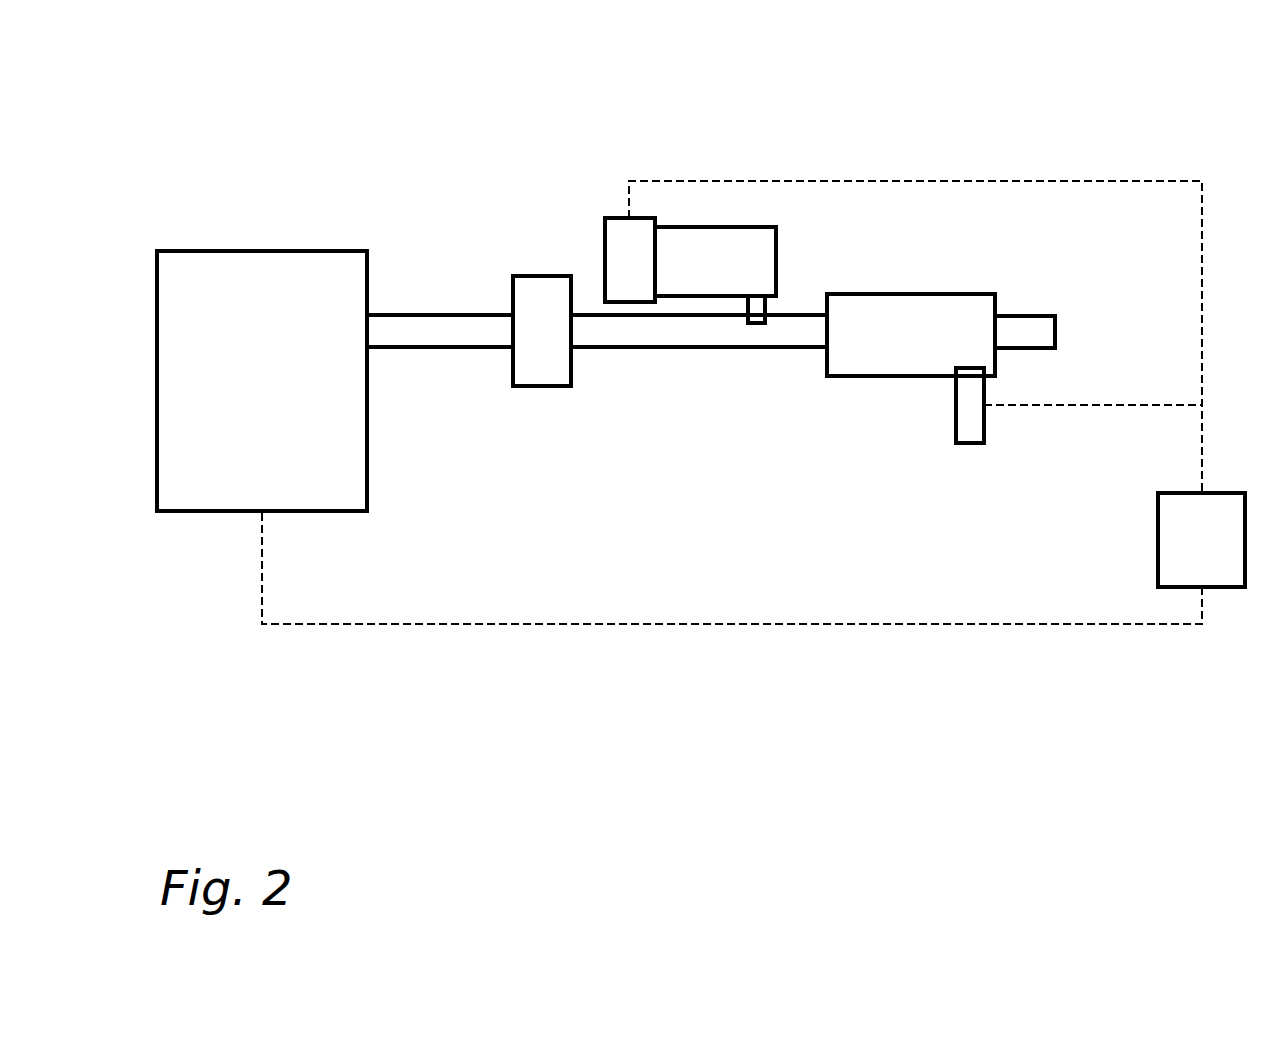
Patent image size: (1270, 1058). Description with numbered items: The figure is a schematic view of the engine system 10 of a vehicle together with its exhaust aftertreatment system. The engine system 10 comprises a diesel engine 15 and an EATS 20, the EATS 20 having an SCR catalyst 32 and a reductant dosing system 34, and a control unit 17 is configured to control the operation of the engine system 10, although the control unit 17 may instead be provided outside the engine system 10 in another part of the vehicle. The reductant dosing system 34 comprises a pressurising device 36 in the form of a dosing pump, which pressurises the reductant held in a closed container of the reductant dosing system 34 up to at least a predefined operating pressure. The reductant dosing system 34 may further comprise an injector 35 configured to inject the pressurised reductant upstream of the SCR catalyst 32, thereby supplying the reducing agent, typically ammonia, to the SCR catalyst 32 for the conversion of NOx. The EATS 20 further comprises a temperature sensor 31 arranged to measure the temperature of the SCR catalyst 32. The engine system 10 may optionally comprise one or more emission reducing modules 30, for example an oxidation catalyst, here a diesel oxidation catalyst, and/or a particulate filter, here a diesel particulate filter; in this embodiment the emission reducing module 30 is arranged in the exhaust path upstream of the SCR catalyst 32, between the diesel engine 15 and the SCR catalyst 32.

The engine system 10 is at (524, 135).
The diesel engine 15 is at (190, 251).
The control unit 17 is at (1223, 587).
The EATS 20 is at (955, 144).
The emission reducing module 30 is at (529, 386).
The temperature sensor 31 is at (972, 443).
The SCR catalyst 32 is at (893, 376).
The reductant dosing system 34 is at (786, 205).
The injector 35 is at (768, 312).
The pressurising device 36 is at (605, 258).